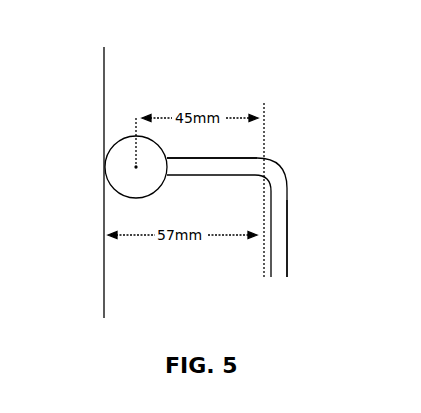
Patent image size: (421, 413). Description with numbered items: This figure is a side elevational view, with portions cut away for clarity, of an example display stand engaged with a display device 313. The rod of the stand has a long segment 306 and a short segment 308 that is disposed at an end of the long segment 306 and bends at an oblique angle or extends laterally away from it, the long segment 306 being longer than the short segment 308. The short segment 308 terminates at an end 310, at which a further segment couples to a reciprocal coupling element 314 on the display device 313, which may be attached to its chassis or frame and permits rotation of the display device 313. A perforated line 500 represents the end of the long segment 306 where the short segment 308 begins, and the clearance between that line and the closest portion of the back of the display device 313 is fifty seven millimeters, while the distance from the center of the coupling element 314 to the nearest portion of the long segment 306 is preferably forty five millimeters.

The display device 313 is at (78, 178).
The reciprocal coupling element 314 is at (116, 138).
The end of the short segment 310 is at (167, 156).
The short segment 308 is at (208, 177).
The long segment 306 is at (289, 241).
The perforated line 500 is at (266, 108).